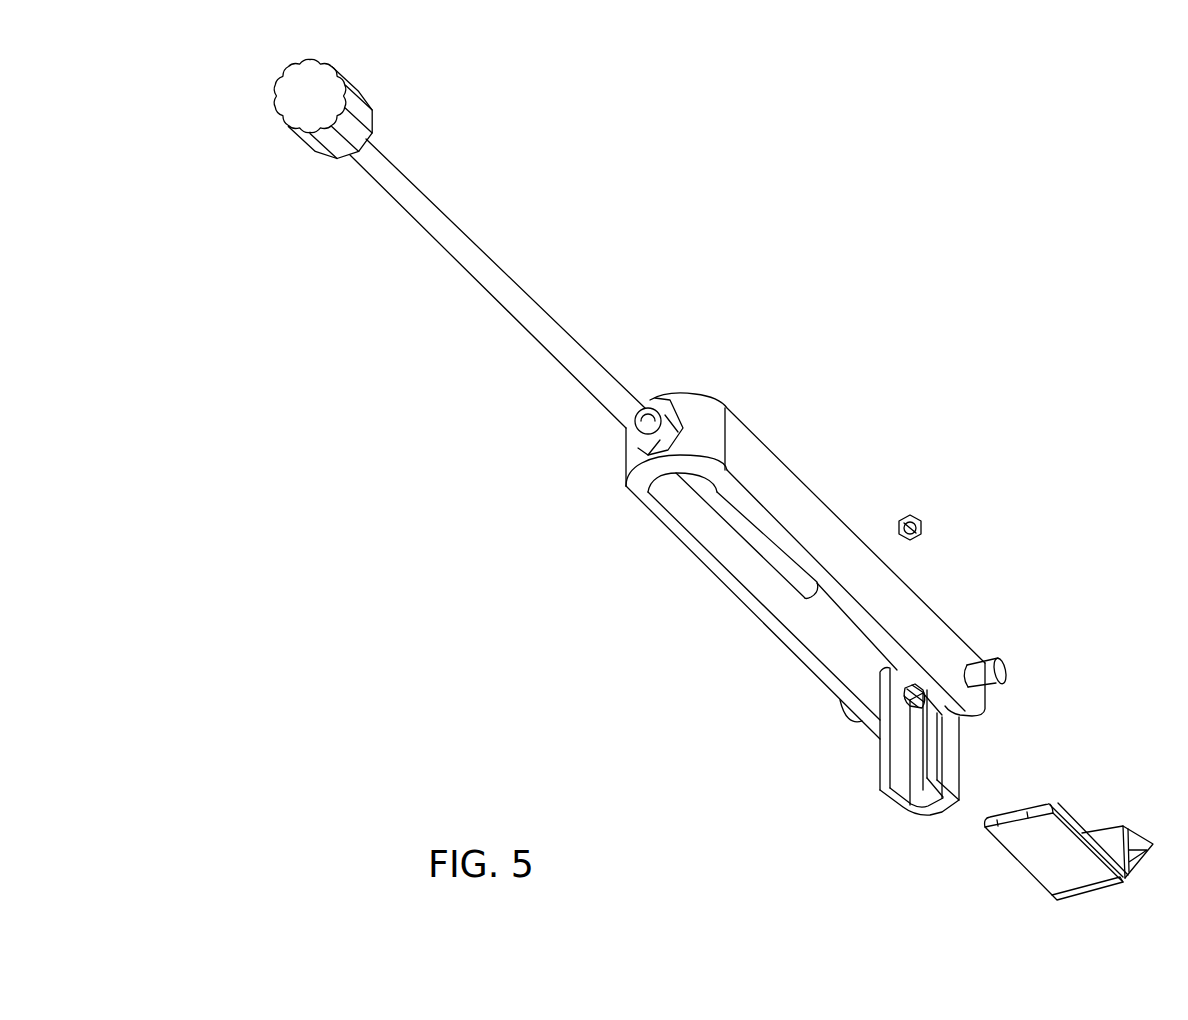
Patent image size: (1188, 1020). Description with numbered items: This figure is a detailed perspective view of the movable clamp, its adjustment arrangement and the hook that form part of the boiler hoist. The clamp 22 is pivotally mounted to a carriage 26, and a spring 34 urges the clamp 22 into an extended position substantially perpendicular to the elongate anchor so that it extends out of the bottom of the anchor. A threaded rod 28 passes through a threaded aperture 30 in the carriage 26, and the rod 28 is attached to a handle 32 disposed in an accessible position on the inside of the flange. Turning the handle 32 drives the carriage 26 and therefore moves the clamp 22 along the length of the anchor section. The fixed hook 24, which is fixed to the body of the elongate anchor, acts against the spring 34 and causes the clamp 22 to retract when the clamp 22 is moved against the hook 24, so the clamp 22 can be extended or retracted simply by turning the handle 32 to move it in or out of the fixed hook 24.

The movable clamp 22 is at (945, 763).
The fixed hook 24 is at (1053, 868).
The carriage 26 is at (787, 477).
The threaded rod 28 is at (463, 251).
The threaded aperture 30 is at (638, 447).
The handle 32 is at (294, 143).
The spring 34 is at (913, 697).